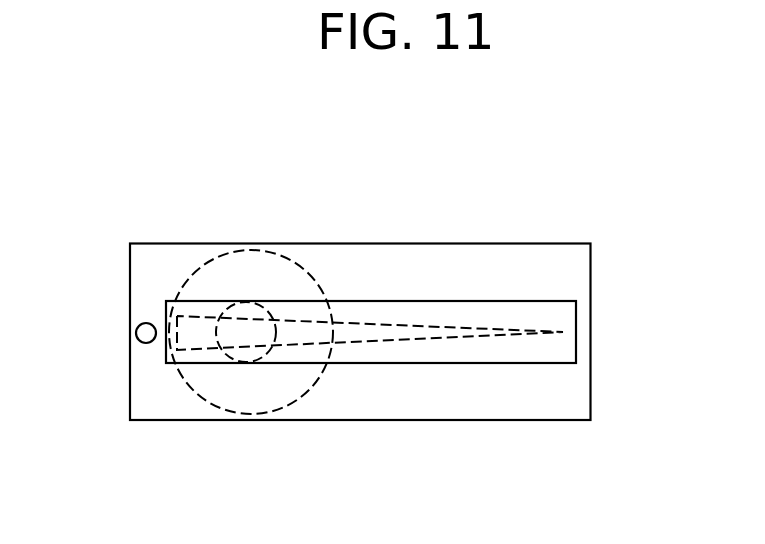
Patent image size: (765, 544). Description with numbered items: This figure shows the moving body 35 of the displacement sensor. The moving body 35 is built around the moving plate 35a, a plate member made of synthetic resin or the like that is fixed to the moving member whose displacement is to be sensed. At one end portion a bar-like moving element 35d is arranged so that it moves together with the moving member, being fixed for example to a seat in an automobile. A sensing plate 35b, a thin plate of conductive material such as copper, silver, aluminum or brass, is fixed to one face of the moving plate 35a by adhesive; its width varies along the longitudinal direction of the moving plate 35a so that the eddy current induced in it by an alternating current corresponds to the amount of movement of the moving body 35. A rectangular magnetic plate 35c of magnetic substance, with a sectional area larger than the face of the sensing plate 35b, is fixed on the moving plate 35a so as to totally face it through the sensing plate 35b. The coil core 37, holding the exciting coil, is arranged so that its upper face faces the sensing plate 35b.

The moving body 35 is at (413, 228).
The moving plate 35a is at (533, 260).
The sensing plate 35b is at (343, 333).
The magnetic plate 35c is at (368, 310).
The moving element 35d is at (136, 333).
The coil core 37 is at (208, 257).